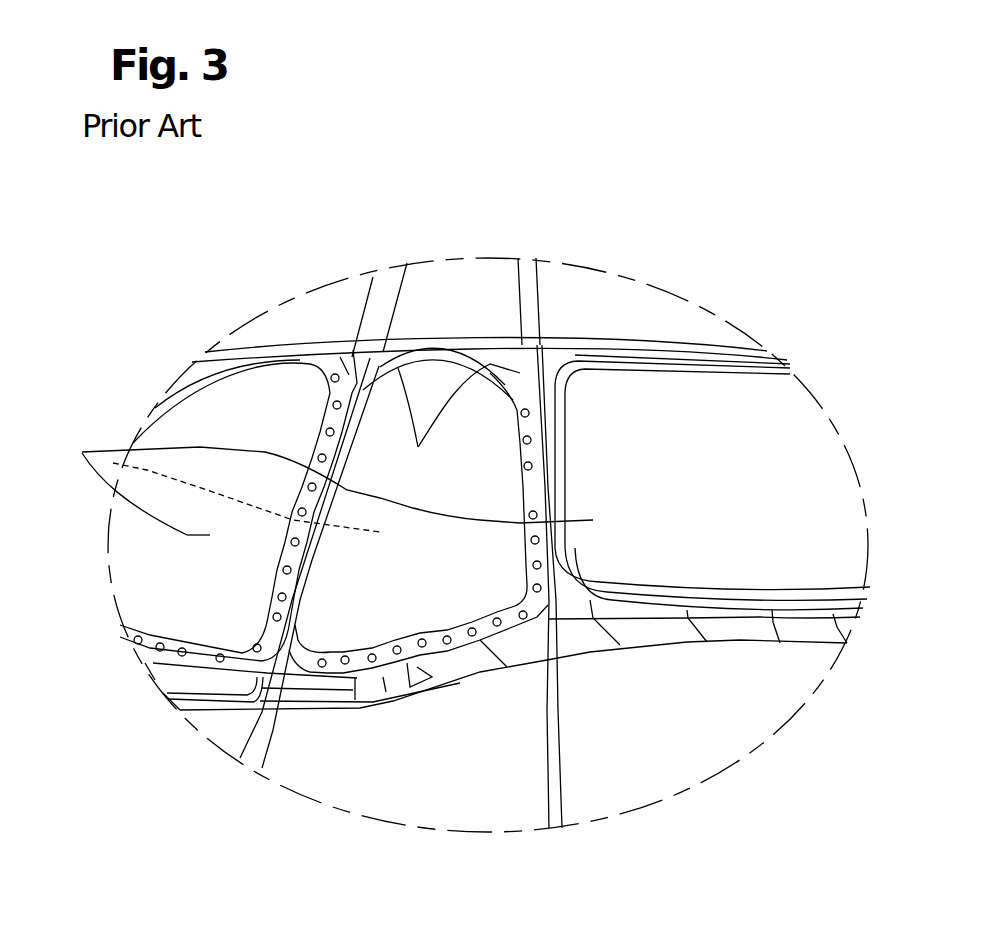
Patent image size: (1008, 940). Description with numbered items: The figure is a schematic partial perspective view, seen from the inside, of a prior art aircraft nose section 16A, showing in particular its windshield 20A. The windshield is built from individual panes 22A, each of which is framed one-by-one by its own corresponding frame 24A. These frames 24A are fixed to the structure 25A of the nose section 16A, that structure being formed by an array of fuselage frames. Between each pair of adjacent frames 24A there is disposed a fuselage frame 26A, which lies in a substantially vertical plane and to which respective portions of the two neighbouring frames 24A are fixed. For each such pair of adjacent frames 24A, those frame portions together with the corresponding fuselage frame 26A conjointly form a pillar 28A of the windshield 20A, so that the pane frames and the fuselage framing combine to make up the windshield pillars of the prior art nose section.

The nose section 16A is at (768, 317).
The windshield 20A is at (777, 437).
The pane 22A is at (305, 486).
The frame 24A is at (227, 650).
The structure 25A is at (468, 292).
The fuselage frame 26A is at (441, 416).
The pillar 28A is at (527, 553).